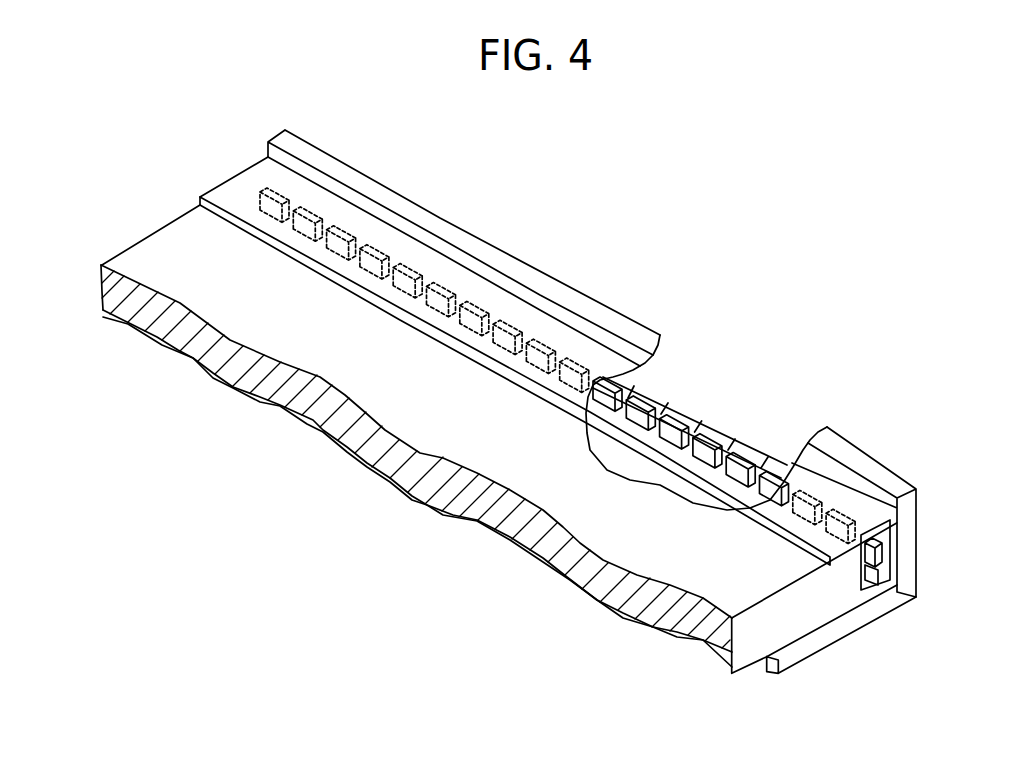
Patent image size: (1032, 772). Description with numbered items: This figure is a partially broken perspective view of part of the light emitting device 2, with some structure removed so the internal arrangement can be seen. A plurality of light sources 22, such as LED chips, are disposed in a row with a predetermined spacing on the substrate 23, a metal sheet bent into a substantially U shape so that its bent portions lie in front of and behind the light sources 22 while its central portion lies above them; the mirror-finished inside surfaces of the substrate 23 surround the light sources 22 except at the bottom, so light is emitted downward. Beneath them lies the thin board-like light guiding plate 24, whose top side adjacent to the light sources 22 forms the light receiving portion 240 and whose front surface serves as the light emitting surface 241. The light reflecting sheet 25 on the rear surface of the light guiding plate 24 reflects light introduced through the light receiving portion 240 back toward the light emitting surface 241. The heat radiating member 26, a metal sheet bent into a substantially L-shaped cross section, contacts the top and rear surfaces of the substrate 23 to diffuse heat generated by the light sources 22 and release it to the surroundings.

The light emitting device 2 is at (962, 272).
The light source 22 is at (742, 465).
The substrate 23 is at (888, 590).
The light guiding plate 24 is at (667, 608).
The light receiving portion 240 is at (876, 582).
The light emitting surface 241 is at (620, 537).
The light reflecting sheet 25 is at (733, 668).
The heat radiating member 26 is at (912, 517).